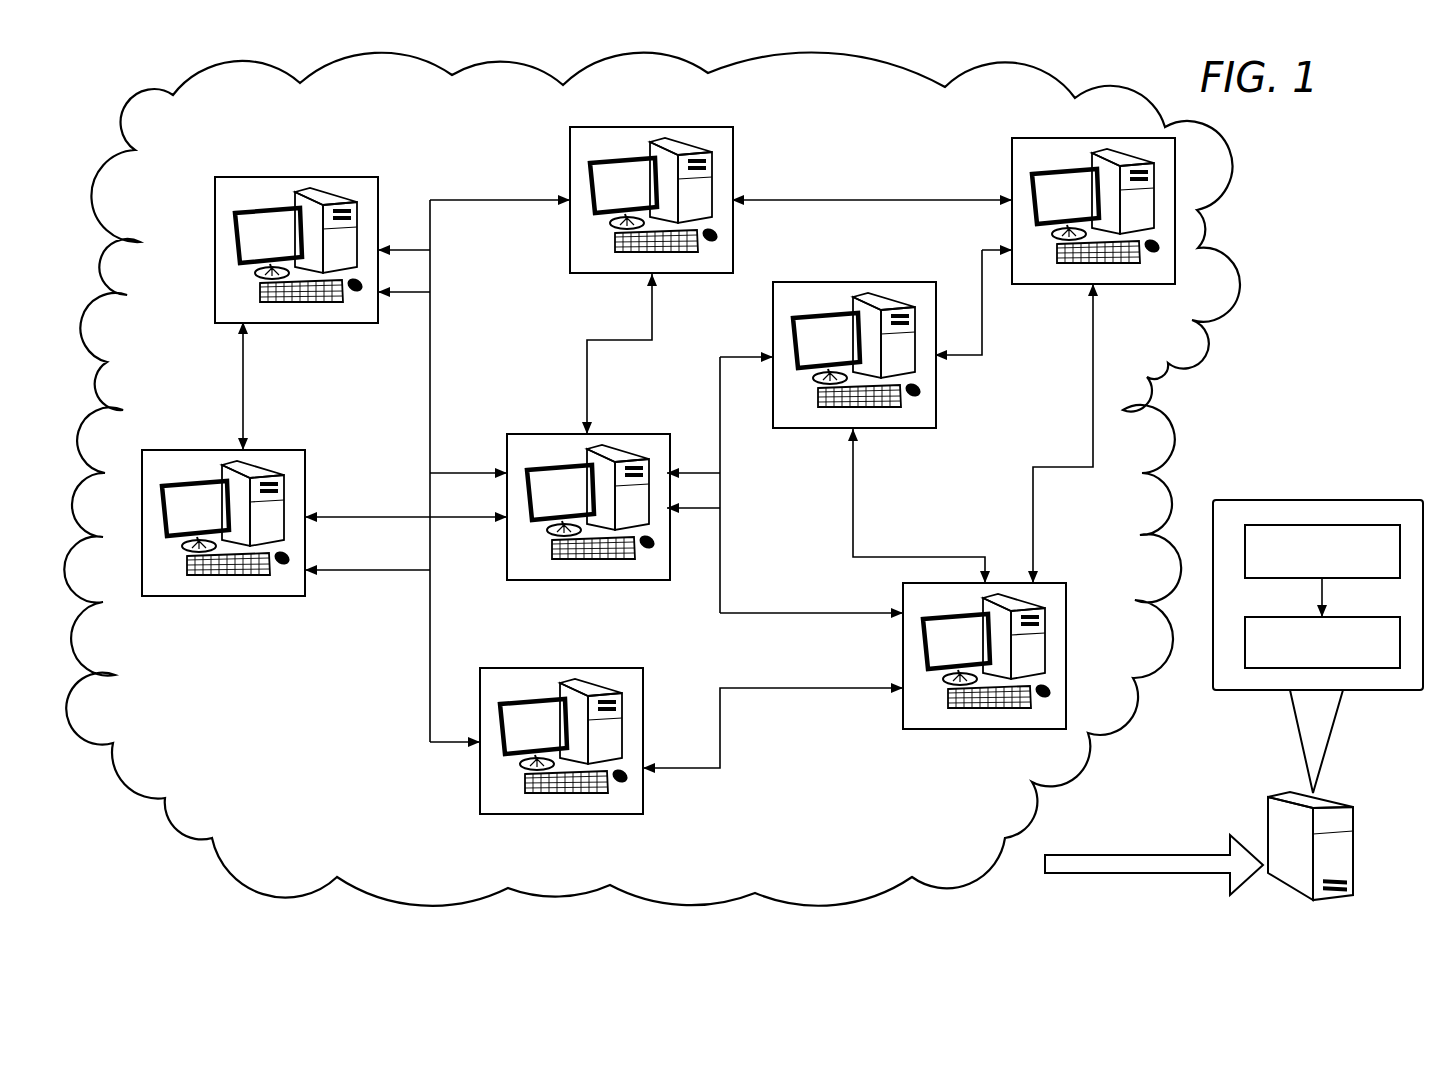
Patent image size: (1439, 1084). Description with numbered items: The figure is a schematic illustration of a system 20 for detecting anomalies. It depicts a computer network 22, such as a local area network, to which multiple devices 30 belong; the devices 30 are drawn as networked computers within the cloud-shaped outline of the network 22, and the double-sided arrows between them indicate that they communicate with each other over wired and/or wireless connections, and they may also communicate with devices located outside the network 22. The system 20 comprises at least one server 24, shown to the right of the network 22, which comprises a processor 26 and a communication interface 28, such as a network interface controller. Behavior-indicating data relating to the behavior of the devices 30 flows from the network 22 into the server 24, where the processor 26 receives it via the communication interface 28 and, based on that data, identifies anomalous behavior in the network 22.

The system for detecting anomalies 20 is at (1377, 883).
The computer network 22 is at (875, 897).
The server 24 is at (1270, 876).
The processor 26 is at (1318, 621).
The communication interface 28 is at (1366, 525).
The devices 30 is at (1027, 138).